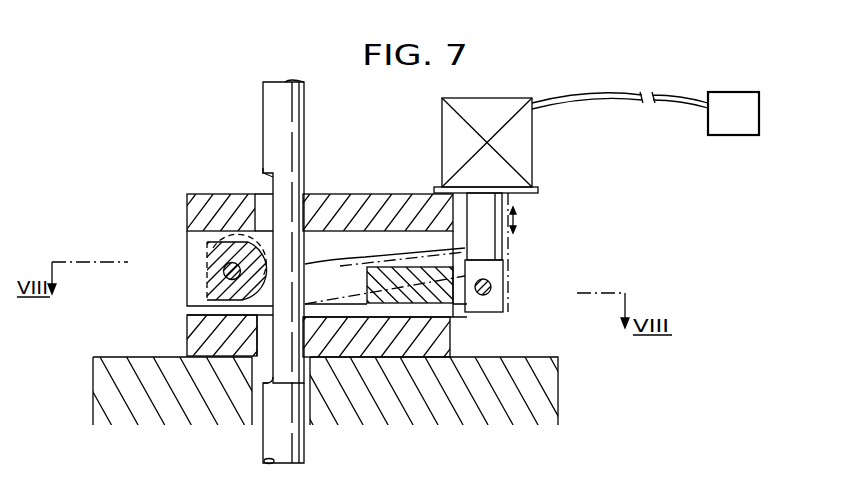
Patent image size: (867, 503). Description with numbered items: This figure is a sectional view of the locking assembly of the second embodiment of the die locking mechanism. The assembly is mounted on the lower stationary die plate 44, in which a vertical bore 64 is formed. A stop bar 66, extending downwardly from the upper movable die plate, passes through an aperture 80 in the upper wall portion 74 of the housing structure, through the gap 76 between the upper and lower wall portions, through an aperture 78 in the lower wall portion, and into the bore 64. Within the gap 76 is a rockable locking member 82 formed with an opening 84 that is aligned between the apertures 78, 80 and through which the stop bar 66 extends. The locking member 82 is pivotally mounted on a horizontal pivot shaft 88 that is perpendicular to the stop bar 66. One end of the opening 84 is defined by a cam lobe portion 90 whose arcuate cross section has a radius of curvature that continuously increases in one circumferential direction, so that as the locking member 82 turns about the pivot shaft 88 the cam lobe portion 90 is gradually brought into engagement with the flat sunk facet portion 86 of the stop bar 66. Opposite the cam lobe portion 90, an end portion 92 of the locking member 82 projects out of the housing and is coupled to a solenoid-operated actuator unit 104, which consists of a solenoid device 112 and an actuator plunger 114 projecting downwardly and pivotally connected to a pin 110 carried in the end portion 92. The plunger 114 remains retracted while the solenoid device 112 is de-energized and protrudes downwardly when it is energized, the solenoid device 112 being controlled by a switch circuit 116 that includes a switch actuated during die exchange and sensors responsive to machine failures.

The lower stationary die plate 44 is at (108, 357).
The vertical bore 64 is at (310, 405).
The stop bar 66 is at (304, 122).
The upper wall portion 74 is at (187, 208).
The gap 76 is at (190, 300).
The aperture 78 is at (262, 383).
The aperture 80 is at (264, 192).
The rockable locking member 82 is at (196, 254).
The opening 84 is at (368, 278).
The flat sunk facet portion 86 is at (270, 177).
The pivot shaft 88 is at (222, 272).
The cam lobe portion 90 is at (255, 362).
The end portion 92 is at (458, 306).
The solenoid-operated actuator unit 104 is at (568, 189).
The pin 110 is at (491, 290).
The solenoid device 112 is at (442, 143).
The actuator plunger 114 is at (503, 250).
The switch circuit 116 is at (733, 135).